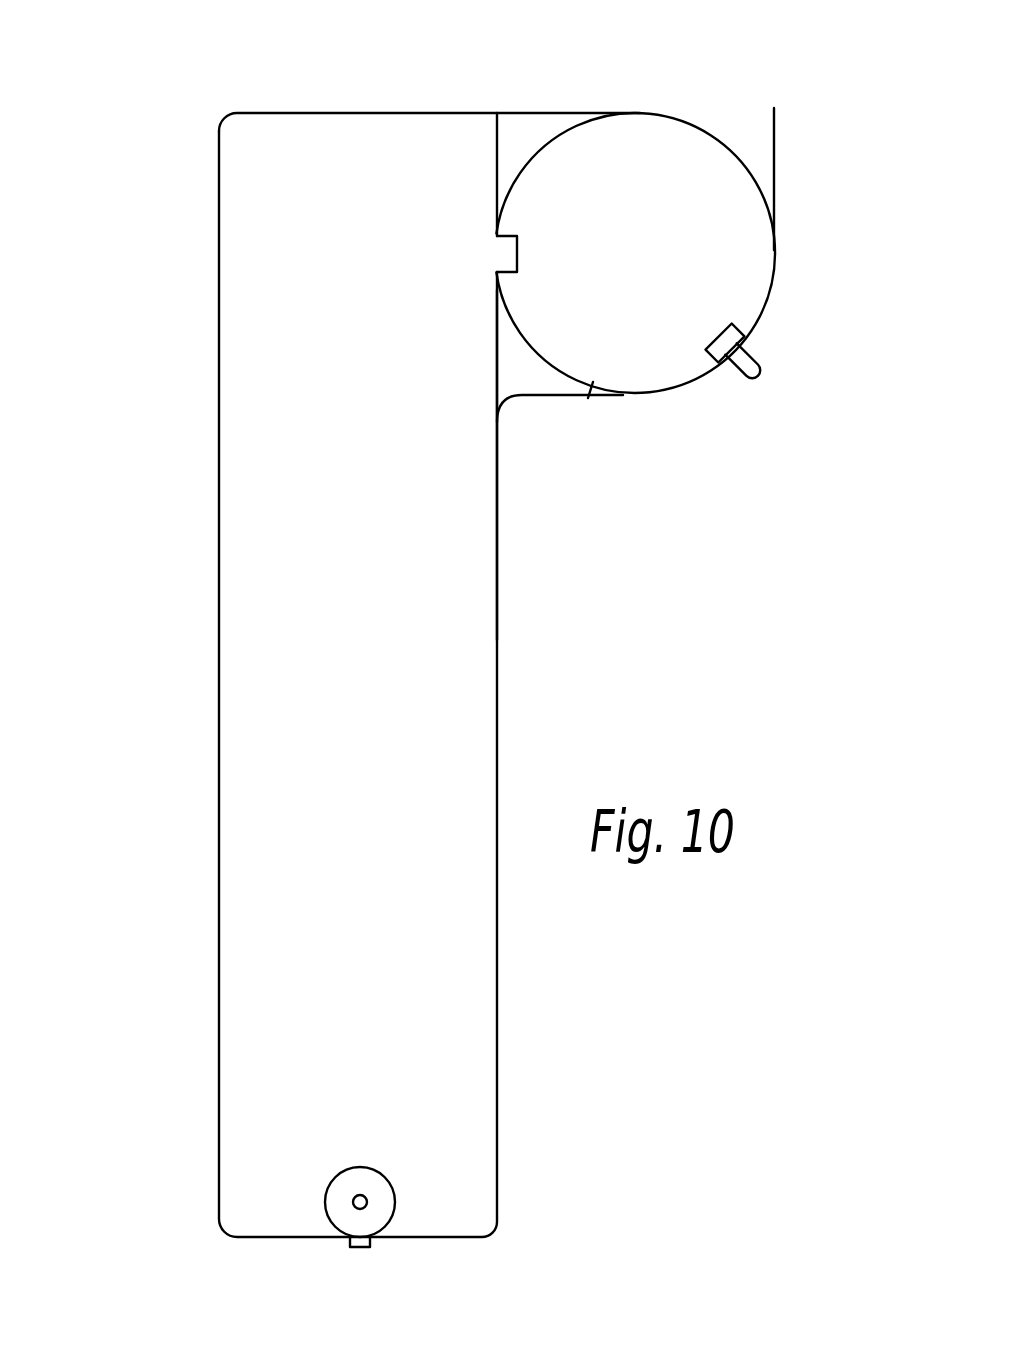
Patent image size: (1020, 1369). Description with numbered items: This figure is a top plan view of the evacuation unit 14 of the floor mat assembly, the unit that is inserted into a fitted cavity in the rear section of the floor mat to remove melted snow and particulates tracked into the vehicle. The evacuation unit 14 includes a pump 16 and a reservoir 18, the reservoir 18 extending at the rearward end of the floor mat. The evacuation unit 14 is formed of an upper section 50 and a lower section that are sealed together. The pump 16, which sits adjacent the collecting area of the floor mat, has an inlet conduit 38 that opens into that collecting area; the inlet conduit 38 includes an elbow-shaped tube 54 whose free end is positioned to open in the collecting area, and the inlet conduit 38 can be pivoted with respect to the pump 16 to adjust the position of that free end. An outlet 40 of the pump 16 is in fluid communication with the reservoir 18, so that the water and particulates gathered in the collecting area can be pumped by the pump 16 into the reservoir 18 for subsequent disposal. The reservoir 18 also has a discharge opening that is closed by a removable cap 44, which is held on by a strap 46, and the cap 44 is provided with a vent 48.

The evacuation unit 14 is at (172, 493).
The pump 16 is at (638, 143).
The reservoir 18 is at (265, 783).
The inlet conduit 38 is at (744, 382).
The outlet 40 is at (513, 253).
The removable cap 44 is at (347, 1180).
The strap 46 is at (364, 1248).
The vent 48 is at (367, 1197).
The upper section 50 is at (499, 655).
The elbow-shaped tube 54 is at (749, 361).